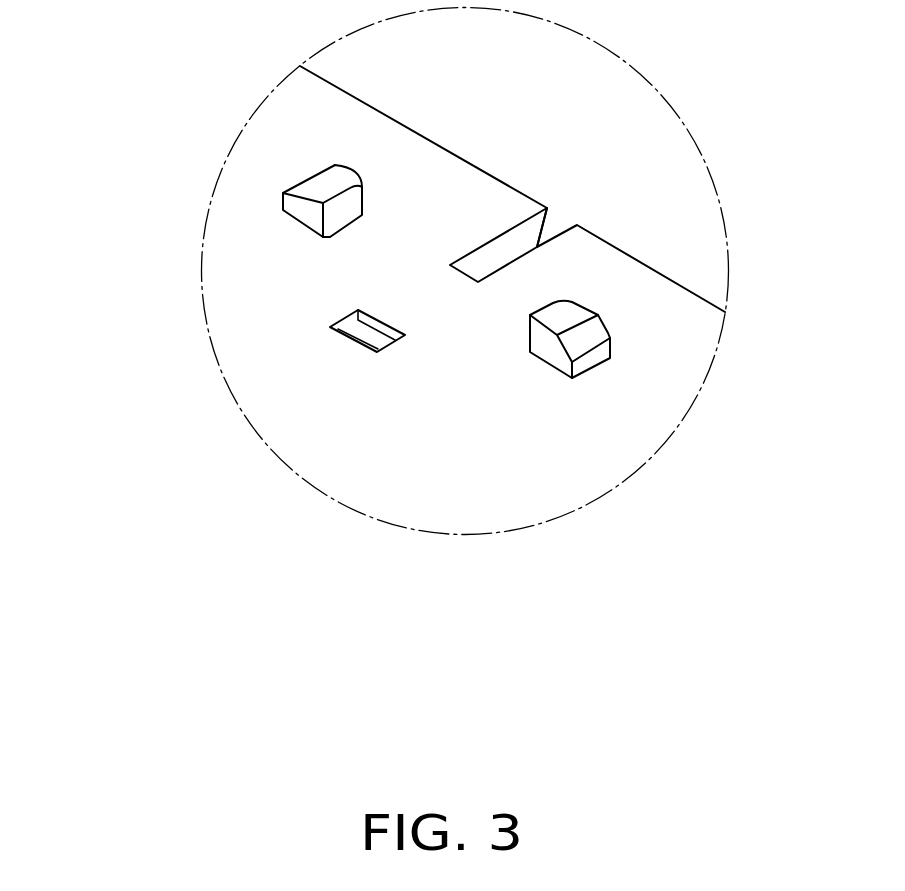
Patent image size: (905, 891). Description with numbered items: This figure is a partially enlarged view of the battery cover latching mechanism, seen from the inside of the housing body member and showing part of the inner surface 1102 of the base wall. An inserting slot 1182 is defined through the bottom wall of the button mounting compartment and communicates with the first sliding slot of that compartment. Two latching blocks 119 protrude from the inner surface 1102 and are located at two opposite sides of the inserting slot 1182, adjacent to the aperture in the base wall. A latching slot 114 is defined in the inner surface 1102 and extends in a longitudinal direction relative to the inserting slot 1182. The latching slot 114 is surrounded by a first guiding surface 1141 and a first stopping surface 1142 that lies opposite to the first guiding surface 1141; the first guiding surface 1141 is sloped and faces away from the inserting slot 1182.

The latching slot 114 is at (222, 349).
The first guiding surface 1141 is at (368, 345).
The first stopping surface 1142 is at (372, 323).
The latching block 119 is at (330, 183).
The inserting slot 1182 is at (518, 248).
The inner surface 1102 is at (532, 420).